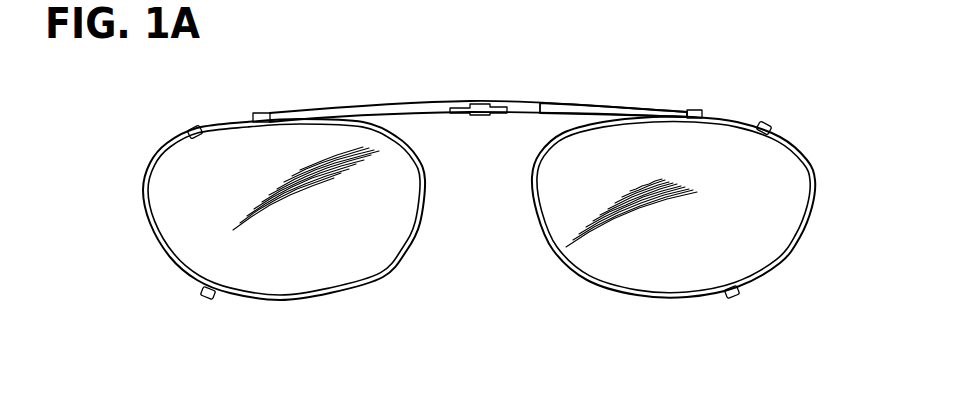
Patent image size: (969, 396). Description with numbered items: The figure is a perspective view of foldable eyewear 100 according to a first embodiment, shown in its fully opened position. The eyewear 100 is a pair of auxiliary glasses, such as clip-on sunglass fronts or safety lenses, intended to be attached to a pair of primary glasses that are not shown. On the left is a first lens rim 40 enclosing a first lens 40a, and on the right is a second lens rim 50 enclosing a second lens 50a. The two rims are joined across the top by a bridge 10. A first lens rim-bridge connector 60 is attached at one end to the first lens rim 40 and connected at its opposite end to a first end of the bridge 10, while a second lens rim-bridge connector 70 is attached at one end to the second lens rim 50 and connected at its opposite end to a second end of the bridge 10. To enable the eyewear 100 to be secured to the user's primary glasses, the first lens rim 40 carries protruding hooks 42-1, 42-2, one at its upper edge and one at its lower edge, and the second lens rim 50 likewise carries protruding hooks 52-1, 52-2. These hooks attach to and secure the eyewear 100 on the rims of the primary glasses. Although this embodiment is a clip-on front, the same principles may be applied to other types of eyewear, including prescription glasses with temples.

The foldable eyewear 100 is at (106, 91).
The first lens rim 40 is at (160, 270).
The first lens 40a is at (318, 268).
The protruding hook 42-1 is at (195, 127).
The protruding hook 42-2 is at (207, 298).
The second lens rim 50 is at (762, 292).
The second lens 50a is at (608, 253).
The protruding hook 52-1 is at (770, 125).
The protruding hook 52-2 is at (737, 299).
The first lens rim-bridge connector 60 is at (372, 107).
The bridge 10 is at (480, 104).
The second lens rim-bridge connector 70 is at (566, 103).